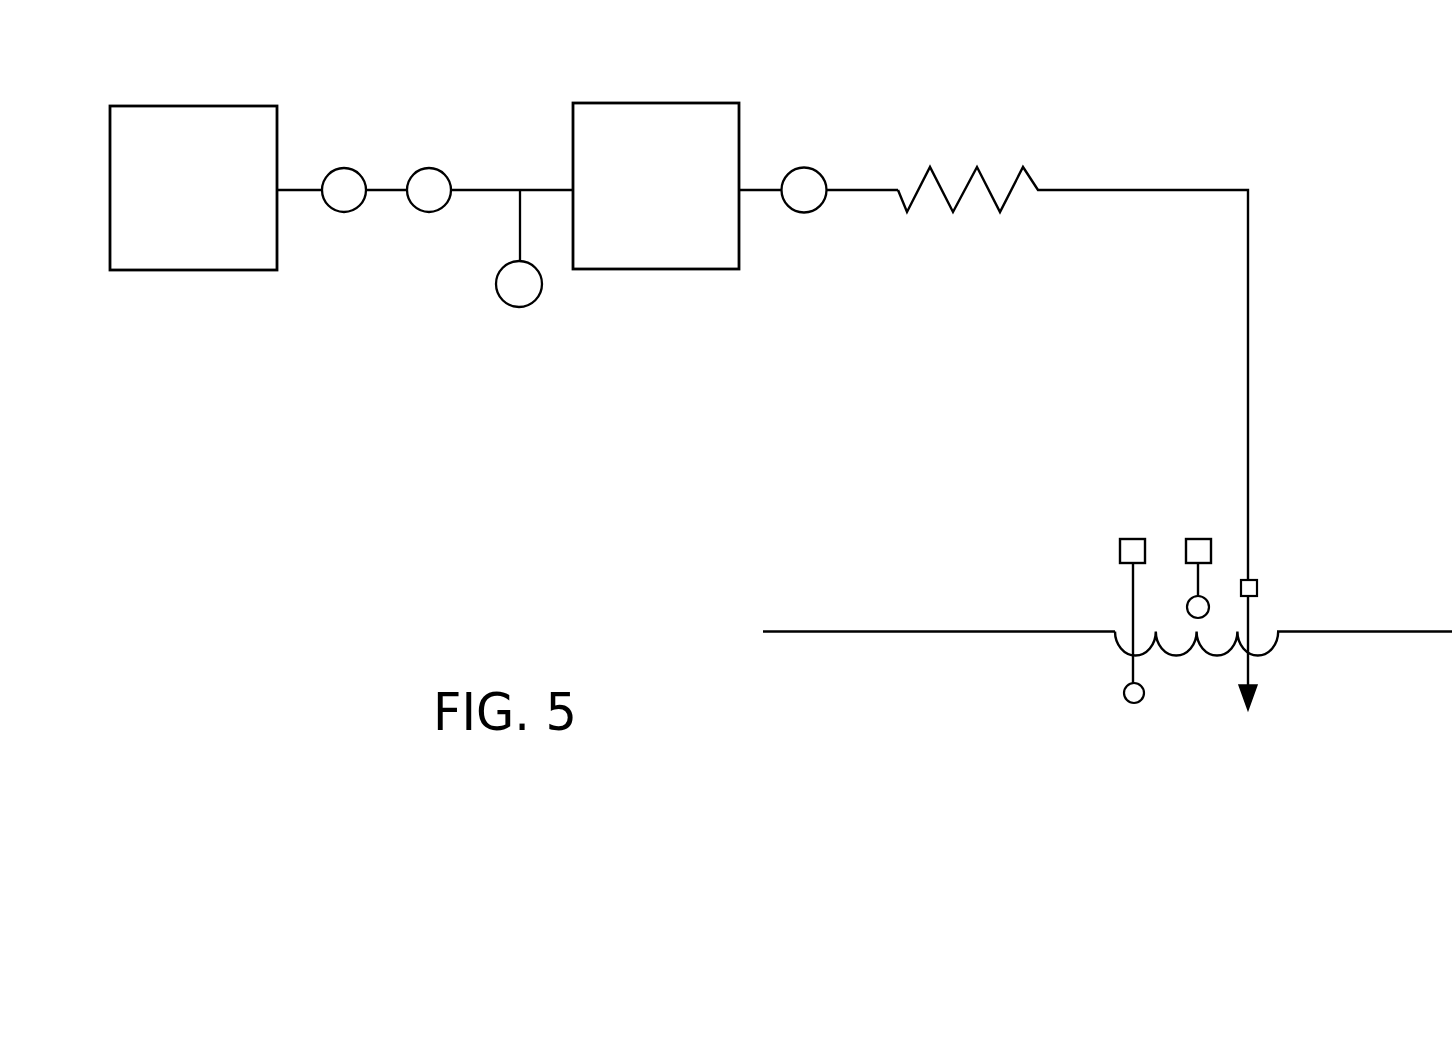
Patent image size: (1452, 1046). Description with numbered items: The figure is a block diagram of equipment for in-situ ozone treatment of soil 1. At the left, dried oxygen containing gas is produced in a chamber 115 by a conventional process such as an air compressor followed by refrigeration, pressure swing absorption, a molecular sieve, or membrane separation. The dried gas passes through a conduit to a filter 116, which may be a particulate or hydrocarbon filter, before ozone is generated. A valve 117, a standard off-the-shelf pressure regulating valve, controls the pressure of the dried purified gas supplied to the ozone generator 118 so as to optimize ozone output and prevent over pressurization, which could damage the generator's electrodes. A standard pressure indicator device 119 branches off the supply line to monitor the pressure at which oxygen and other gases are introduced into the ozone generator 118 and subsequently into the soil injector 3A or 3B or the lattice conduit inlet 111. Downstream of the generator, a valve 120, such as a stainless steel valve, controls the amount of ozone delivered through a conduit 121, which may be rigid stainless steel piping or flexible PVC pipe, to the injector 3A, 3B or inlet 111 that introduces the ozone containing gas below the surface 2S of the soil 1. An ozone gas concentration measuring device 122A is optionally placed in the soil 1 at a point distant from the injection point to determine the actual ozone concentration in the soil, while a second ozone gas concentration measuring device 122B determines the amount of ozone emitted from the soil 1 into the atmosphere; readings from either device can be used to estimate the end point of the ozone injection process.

The chamber 115 is at (200, 105).
The filter 116 is at (344, 213).
The valve 117 is at (430, 167).
The ozone generator 118 is at (685, 102).
The pressure indicator device 119 is at (496, 282).
The valve 120 is at (807, 168).
The conduit 121 is at (982, 173).
The ozone gas concentration measuring device 122A is at (1132, 538).
The ozone gas concentration measuring device 122B is at (1199, 538).
The lattice conduit inlet 111 is at (1336, 669).
The soil injector 3A is at (1249, 588).
The soil injector 3B is at (1250, 677).
The substrate surface 2S is at (1337, 630).
The soil 1 is at (1038, 701).